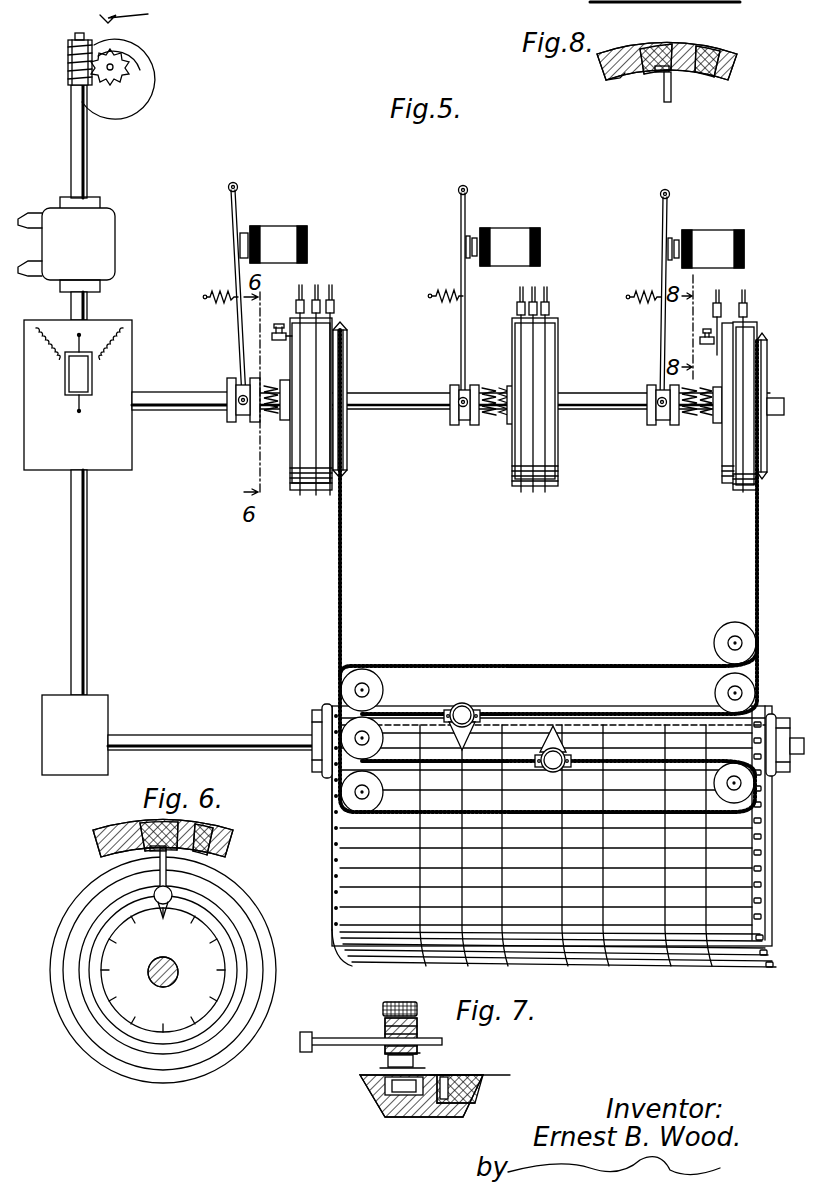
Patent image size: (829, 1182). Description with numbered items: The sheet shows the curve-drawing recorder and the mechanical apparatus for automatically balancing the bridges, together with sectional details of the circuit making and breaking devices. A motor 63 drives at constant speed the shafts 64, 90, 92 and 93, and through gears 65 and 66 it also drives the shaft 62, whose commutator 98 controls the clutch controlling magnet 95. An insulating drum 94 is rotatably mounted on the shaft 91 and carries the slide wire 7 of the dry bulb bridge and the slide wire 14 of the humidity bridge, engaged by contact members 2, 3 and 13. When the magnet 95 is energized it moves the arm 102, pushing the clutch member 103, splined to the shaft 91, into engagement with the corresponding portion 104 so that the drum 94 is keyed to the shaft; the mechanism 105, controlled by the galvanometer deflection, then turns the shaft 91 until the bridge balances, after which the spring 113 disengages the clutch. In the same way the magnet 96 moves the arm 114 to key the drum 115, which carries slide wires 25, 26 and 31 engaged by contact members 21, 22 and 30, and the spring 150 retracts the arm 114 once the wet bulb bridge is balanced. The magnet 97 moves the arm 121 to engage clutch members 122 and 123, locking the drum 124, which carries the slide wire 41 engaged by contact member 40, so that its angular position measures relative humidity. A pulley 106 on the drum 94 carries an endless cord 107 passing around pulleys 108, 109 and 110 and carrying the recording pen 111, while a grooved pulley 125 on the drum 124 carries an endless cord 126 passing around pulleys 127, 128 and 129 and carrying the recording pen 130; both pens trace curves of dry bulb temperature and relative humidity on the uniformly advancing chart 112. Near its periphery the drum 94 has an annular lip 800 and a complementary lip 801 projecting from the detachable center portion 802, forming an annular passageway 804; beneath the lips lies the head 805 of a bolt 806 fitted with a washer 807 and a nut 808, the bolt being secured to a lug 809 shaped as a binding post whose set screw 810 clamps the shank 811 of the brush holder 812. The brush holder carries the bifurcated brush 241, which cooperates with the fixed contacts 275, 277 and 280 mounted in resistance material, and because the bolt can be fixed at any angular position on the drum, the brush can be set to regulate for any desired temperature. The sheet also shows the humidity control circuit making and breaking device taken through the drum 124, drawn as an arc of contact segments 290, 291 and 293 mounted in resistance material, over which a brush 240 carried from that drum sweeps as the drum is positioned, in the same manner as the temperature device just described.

In FIG. 5, the gear 65 is at (68, 72).
In FIG. 5, the shaft 62 is at (113, 67).
In FIG. 5, the gear 66 is at (126, 82).
In FIG. 5, the commutator 98 is at (126, 107).
In FIG. 5, the shaft 64 is at (88, 172).
In FIG. 5, the motor 63 is at (110, 244).
In FIG. 5, the shaft 90 is at (88, 305).
In FIG. 5, the balancing mechanism 105 is at (126, 453).
In FIG. 5, the shaft 91 is at (174, 392).
In FIG. 5, the shaft 92 is at (88, 528).
In FIG. 5, the shaft 93 is at (207, 735).
In FIG. 5, the arm 102 is at (233, 262).
In FIG. 5, the clutch controlling magnet 95 is at (281, 238).
In FIG. 5, the spring 113 is at (222, 300).
In FIG. 5, the clutch member 103 is at (247, 421).
In FIG. 5, the clutch portion 104 is at (270, 416).
In FIG. 5, the contact member 2 is at (298, 300).
In FIG. 5, the contact member 3 is at (314, 300).
In FIG. 5, the contact member 13 is at (334, 303).
In FIG. 5, the insulating drum 94 is at (332, 322).
In FIG. 6, the insulating drum 94 is at (242, 892).
In FIG. 7, the insulating drum 94 is at (425, 1097).
In FIG. 5, the pulley 106 is at (347, 352).
In FIG. 5, the slide wire 7 is at (316, 495).
In FIG. 5, the slide wire 14 is at (330, 495).
In FIG. 5, the arm 114 is at (460, 270).
In FIG. 5, the clutch controlling magnet 96 is at (510, 238).
In FIG. 5, the contact member 22 is at (530, 290).
In FIG. 5, the contact member 21 is at (517, 306).
In FIG. 5, the contact member 30 is at (549, 305).
In FIG. 5, the drum 115 is at (558, 330).
In FIG. 5, the spring 150 is at (446, 300).
In FIG. 5, the slide wire 25 is at (521, 492).
In FIG. 5, the slide wire 26 is at (533, 492).
In FIG. 5, the slide wire 31 is at (545, 492).
In FIG. 5, the arm 121 is at (660, 271).
In FIG. 5, the clutch controlling magnet 97 is at (708, 240).
In FIG. 5, the contact member 40 is at (748, 305).
In FIG. 5, the drum 124 is at (750, 332).
In FIG. 5, the grooved pulley 125 is at (767, 360).
In FIG. 5, the clutch member 122 is at (683, 420).
In FIG. 5, the clutch member 123 is at (710, 420).
In FIG. 5, the slide wire 41 is at (743, 492).
In FIG. 5, the endless cord 107 is at (342, 572).
In FIG. 5, the endless cord 126 is at (757, 562).
In FIG. 5, the pulley 127 is at (714, 640).
In FIG. 5, the pulley 128 is at (376, 690).
In FIG. 5, the pulley 129 is at (715, 693).
In FIG. 5, the recording pen 130 is at (482, 690).
In FIG. 5, the recording pen 111 is at (553, 740).
In FIG. 5, the pulley 110 is at (376, 738).
In FIG. 5, the pulley 109 is at (714, 783).
In FIG. 5, the pulley 108 is at (341, 793).
In FIG. 5, the chart 112 is at (332, 838).
In FIG. 6, the fixed contact 277 is at (158, 826).
In FIG. 6, the fixed contact 275 is at (122, 835).
In FIG. 6, the fixed contact 280 is at (215, 832).
In FIG. 6, the bifurcated brush 241 is at (133, 848).
In FIG. 6, the annular passageway 804 is at (232, 935).
In FIG. 7, the annular passageway 804 is at (412, 1095).
In FIG. 8, the brush holder 812 is at (669, 72).
In FIG. 7, the brush holder 812 is at (303, 1037).
In FIG. 7, the set screw 810 is at (400, 1002).
In FIG. 8, the shank 811 is at (671, 96).
In FIG. 7, the shank 811 is at (355, 1038).
In FIG. 7, the lug 809 is at (417, 1030).
In FIG. 7, the nut 808 is at (388, 1062).
In FIG. 7, the bolt 806 is at (418, 1052).
In FIG. 7, the complementary lip 801 is at (480, 1073).
In FIG. 7, the washer 807 is at (382, 1070).
In FIG. 7, the center portion 802 is at (470, 1090).
In FIG. 7, the annular lip 800 is at (380, 1095).
In FIG. 7, the bolt head 805 is at (398, 1095).
In FIG. 8, the contact segment 290 is at (628, 38).
In FIG. 8, the contact segment 291 is at (670, 38).
In FIG. 8, the contact segment 293 is at (718, 38).
In FIG. 8, the pointer 240 is at (622, 78).